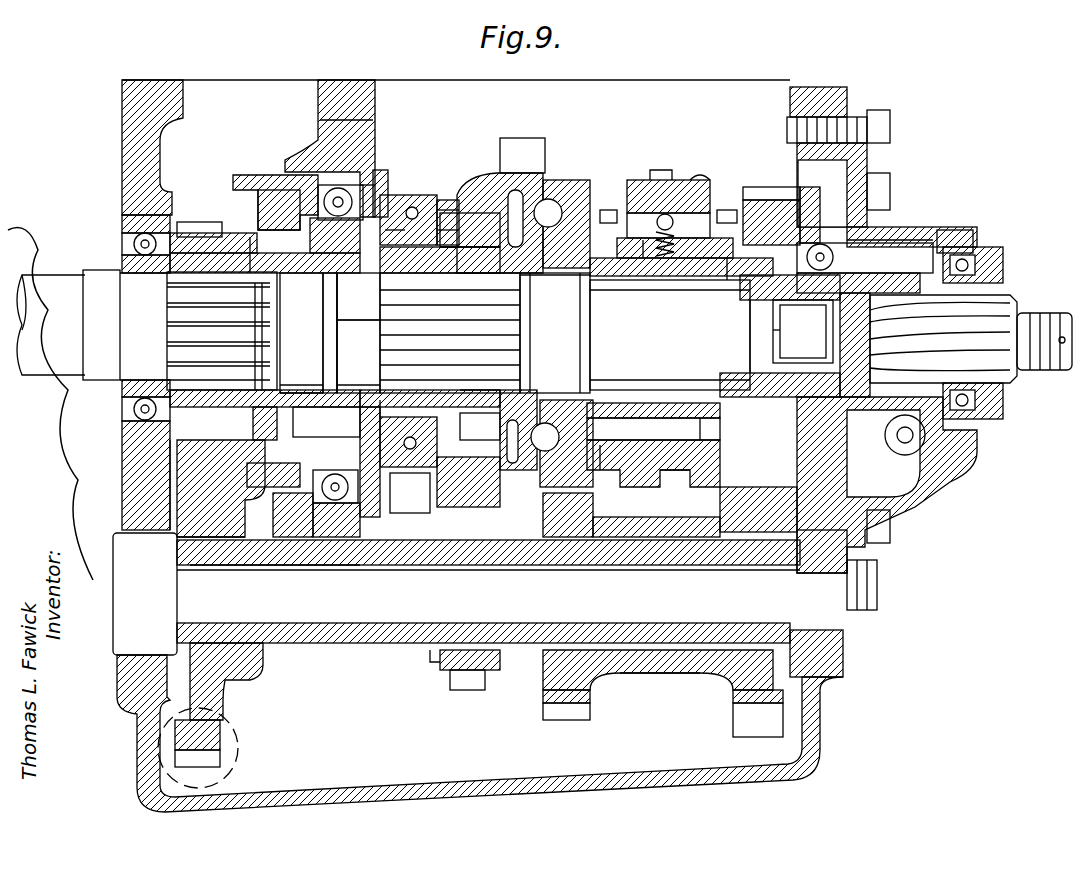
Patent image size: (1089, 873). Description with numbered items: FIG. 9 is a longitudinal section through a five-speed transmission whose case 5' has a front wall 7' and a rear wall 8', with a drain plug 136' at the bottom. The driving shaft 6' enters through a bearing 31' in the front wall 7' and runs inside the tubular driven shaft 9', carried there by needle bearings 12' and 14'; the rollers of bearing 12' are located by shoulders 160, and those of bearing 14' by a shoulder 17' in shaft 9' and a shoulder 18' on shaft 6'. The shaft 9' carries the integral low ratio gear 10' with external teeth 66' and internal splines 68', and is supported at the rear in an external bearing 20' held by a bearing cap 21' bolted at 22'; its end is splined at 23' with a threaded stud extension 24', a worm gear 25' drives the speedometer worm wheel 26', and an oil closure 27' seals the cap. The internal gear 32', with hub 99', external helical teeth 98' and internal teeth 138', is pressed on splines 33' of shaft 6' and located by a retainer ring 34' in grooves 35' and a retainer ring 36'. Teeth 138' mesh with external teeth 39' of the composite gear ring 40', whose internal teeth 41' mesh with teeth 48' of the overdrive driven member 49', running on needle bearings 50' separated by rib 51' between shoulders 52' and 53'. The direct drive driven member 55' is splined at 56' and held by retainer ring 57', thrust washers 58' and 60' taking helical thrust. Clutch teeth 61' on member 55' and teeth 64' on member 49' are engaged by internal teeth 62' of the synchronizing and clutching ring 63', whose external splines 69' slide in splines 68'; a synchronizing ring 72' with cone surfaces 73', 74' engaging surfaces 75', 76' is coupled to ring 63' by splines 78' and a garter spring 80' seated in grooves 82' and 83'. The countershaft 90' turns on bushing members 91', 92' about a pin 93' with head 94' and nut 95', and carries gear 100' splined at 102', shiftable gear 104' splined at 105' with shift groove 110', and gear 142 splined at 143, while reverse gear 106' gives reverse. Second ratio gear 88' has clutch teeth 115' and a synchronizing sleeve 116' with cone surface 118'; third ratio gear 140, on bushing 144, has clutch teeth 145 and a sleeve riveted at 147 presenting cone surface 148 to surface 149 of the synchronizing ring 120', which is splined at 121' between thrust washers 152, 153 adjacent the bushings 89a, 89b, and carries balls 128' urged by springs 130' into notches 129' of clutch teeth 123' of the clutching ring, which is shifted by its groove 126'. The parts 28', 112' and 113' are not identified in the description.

The transmission case 5' is at (480, 735).
The driving shaft 6' is at (51, 311).
The front wall 7' is at (136, 305).
The rear wall 8' is at (839, 653).
The driven shaft 9' is at (555, 293).
The low ratio gear 10' is at (520, 198).
The needle-point bearing 12' is at (555, 333).
The needle-point bearing 14' is at (799, 323).
The shoulder 17' is at (803, 331).
The shoulder 18' is at (676, 335).
The external bearing 20' is at (865, 258).
The bearing cap 21' is at (912, 227).
The bolts 22' is at (860, 323).
The splines 23' is at (958, 322).
The threaded stud extension 24' is at (1044, 328).
The worm gear 25' is at (887, 485).
The worm wheel 26' is at (896, 453).
The oil closure means 27' is at (983, 323).
The flange 28' is at (890, 220).
The bearing 31' is at (126, 242).
The internal gear 32' is at (275, 173).
The splines 33' is at (205, 331).
The retainer ring 34' is at (213, 230).
The grooves 35' is at (231, 336).
The retainer ring 36' is at (126, 408).
The external helical teeth 39' is at (283, 190).
The composite gear ring 40' is at (279, 212).
The internal helical teeth 41' is at (301, 324).
The external helical teeth 48' is at (301, 382).
The overdrive driven member 49' is at (315, 329).
The needle-point bearings 50' is at (355, 377).
The annular rib 51' is at (313, 333).
The shoulder 52' is at (306, 363).
The shoulder 53' is at (358, 344).
The direct drive driven member 55' is at (450, 332).
The splines 56' is at (480, 367).
The retainer ring 57' is at (430, 417).
The thrust washer 58' is at (440, 283).
The thrust washer 60' is at (265, 415).
The external clutch teeth 61' is at (470, 230).
The internal clutch teeth 62' is at (456, 178).
The synchronizing and clutching ring 63' is at (456, 198).
The external clutch teeth 64' is at (388, 190).
The external teeth 66' is at (524, 141).
The internal splines 68' is at (470, 245).
The external splines 69' is at (500, 183).
The synchronizing ring 72' is at (404, 458).
The conical surface 73' is at (326, 422).
The conical surface 74' is at (468, 482).
The tapered surface 75' is at (364, 430).
The tapered surface 76' is at (423, 388).
The external splines 78' is at (409, 195).
The garter spring 80' is at (453, 186).
The annular groove 82' is at (358, 295).
The internal groove 83' is at (412, 198).
The second ratio gear 88' is at (566, 208).
The bushing 89a is at (567, 710).
The bushing 89b is at (593, 407).
The countershaft 90' is at (488, 573).
The bushing member 91' is at (275, 583).
The bushing member 92' is at (776, 568).
The pin 93' is at (483, 670).
The head 94' is at (131, 594).
The nut 95' is at (881, 583).
The external helical teeth 98' is at (153, 219).
The hub 99' is at (222, 262).
The gear 100' is at (238, 488).
The splines 102' is at (211, 569).
The shiftable gear 104' is at (471, 699).
The splines 105' is at (470, 636).
The reverse gear 106' is at (412, 493).
The groove 110' is at (419, 683).
The ring 112' is at (394, 166).
The partition wall 113' is at (352, 148).
The clutch teeth 115' is at (477, 166).
The synchronizing sleeve 116' is at (665, 274).
The conical synchronizing surface 118' is at (635, 285).
The synchronizing ring 120' is at (653, 478).
The splines 121' is at (662, 279).
The internal clutch teeth 123' is at (618, 470).
The external groove 126' is at (685, 493).
The ball members 128' is at (668, 195).
The notches 129' is at (696, 171).
The coiled springs 130' is at (668, 271).
The drain plug 136' is at (229, 748).
The internal helical teeth 138' is at (309, 195).
The third ratio gear 140 is at (765, 215).
The gear 142 is at (747, 705).
The splines 143 is at (687, 673).
The bushing 144 is at (727, 280).
The clutch teeth 145 is at (728, 210).
The rivets 147 is at (713, 263).
The friction clutch surface 148 is at (713, 405).
The friction clutch surface 149 is at (718, 452).
The thrust washer 152 is at (630, 405).
The thrust washer 153 is at (738, 396).
The shoulders 160 is at (528, 390).